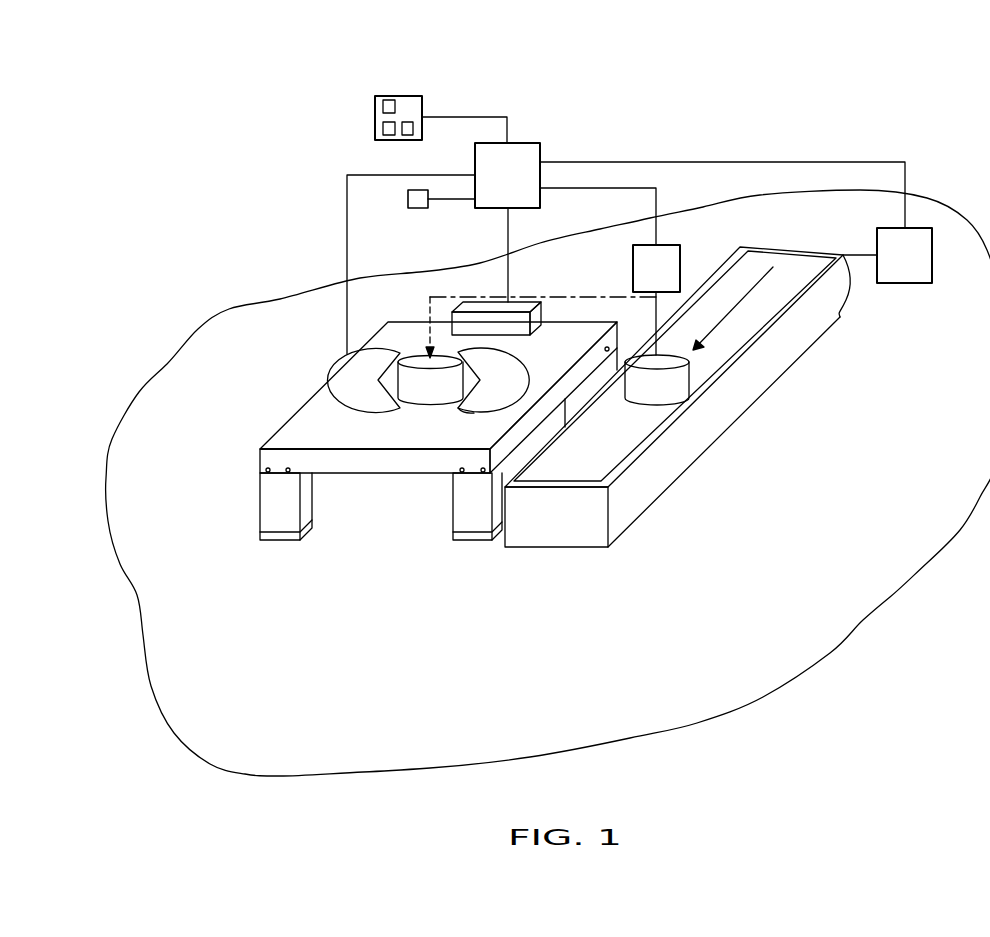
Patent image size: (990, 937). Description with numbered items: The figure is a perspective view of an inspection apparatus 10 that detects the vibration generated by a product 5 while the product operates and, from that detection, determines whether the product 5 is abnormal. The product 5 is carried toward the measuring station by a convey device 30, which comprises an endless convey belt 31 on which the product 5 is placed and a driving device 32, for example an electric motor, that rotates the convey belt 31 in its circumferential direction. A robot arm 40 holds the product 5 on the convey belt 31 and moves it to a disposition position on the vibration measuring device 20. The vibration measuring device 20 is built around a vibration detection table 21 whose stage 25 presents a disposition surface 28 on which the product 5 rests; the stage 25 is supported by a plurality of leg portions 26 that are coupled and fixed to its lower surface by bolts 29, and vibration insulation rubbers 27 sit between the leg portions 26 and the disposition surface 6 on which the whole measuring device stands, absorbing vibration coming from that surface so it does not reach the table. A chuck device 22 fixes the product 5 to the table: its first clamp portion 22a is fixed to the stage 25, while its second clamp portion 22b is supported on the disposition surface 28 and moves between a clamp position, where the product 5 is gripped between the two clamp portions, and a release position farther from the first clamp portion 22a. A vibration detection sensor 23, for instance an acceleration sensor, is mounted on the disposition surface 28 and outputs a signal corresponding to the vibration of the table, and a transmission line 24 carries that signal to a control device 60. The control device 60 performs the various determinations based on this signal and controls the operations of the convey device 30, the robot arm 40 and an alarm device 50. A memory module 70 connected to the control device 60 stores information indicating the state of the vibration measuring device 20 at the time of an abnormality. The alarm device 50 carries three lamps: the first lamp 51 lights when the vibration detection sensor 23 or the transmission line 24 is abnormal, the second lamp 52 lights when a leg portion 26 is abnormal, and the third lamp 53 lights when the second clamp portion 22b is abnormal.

The product 5 is at (425, 397).
The disposition surface 6 is at (408, 547).
The inspection apparatus 10 is at (644, 124).
The vibration measuring device 20 is at (408, 454).
The vibration detection table 21 is at (366, 484).
The chuck device 22 is at (384, 388).
The first clamp portion 22a is at (487, 398).
The second clamp portion 22b is at (355, 366).
The vibration detection sensor 23 is at (526, 302).
The transmission line 24 is at (506, 246).
The stage 25 is at (338, 472).
The leg portions 26 is at (275, 513).
The vibration insulation rubbers 27 is at (272, 537).
The disposition surface 28 is at (308, 433).
The bolts 29 is at (266, 471).
The convey device 30 is at (677, 397).
The convey belt 31 is at (613, 445).
The driving device 32 is at (906, 280).
The robot arm 40 is at (672, 262).
The alarm device 50 is at (400, 94).
The first lamp 51 is at (383, 107).
The second lamp 52 is at (389, 135).
The third lamp 53 is at (413, 128).
The control device 60 is at (526, 143).
The memory module 70 is at (408, 199).